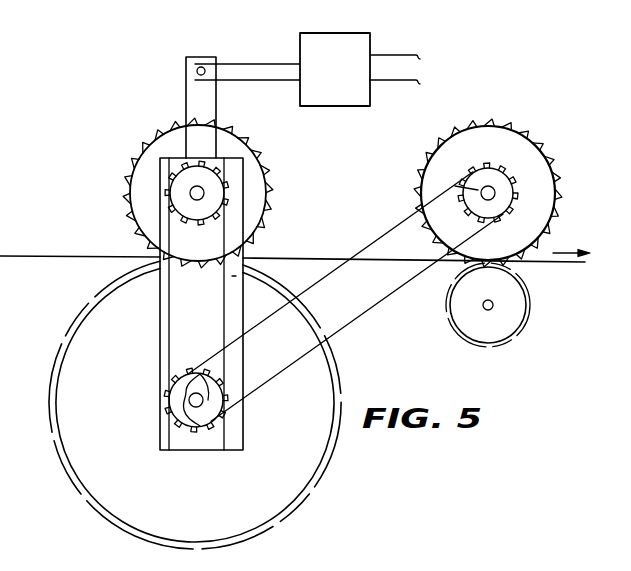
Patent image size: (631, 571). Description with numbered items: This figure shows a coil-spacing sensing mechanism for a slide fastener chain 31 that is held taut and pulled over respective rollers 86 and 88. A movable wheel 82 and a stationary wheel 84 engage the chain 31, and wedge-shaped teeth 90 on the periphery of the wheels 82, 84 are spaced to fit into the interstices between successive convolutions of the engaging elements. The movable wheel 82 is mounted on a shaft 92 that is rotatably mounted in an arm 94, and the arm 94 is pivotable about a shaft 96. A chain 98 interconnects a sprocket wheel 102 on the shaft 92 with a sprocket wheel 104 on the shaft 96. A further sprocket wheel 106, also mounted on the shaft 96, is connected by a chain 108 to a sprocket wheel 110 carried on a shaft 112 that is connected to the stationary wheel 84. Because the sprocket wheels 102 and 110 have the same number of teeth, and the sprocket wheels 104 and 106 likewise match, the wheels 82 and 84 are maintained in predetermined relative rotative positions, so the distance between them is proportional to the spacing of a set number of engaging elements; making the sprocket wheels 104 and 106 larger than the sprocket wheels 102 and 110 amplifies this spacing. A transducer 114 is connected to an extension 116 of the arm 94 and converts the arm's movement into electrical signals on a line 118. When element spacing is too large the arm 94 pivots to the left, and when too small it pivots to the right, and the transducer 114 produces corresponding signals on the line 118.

The slide fastener chain 31 is at (95, 255).
The movable wheel 82 is at (255, 175).
The stationary wheel 84 is at (514, 147).
The roller 86 is at (328, 364).
The roller 88 is at (516, 319).
The wedge-shaped teeth 90 is at (266, 219).
The shaft 92 is at (192, 193).
The arm 94 is at (238, 275).
The shaft 96 is at (198, 408).
The chain 98 is at (168, 314).
The sprocket wheel 102 is at (217, 190).
The sprocket wheel 104 is at (175, 407).
The sprocket wheel 106 is at (210, 412).
The chain 108 is at (405, 285).
The sprocket wheel 110 is at (508, 188).
The shaft 112 is at (455, 186).
The transducer 114 is at (347, 52).
The extension 116 is at (200, 98).
The line 118 is at (418, 69).